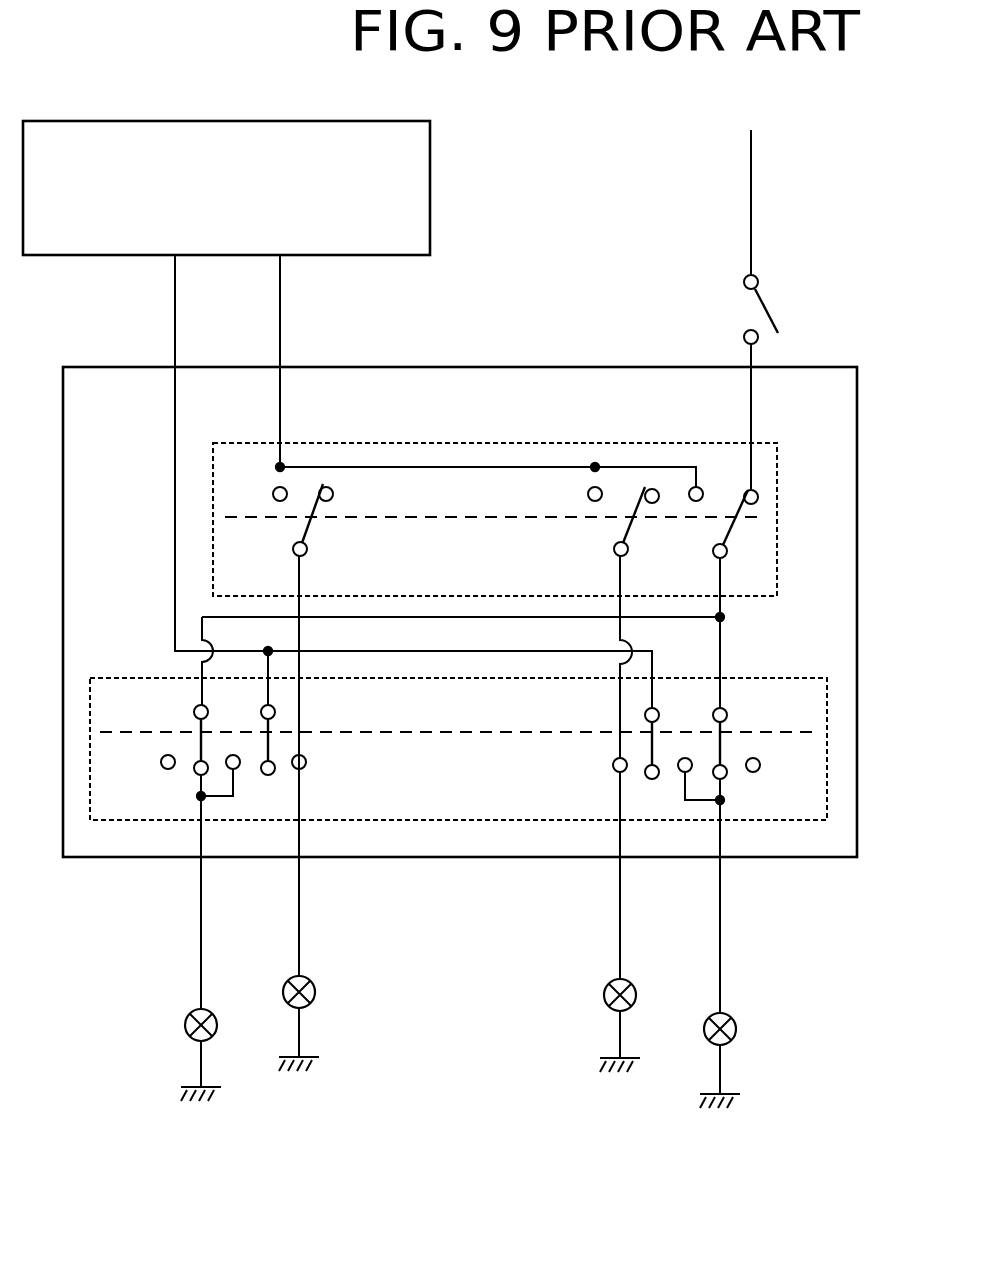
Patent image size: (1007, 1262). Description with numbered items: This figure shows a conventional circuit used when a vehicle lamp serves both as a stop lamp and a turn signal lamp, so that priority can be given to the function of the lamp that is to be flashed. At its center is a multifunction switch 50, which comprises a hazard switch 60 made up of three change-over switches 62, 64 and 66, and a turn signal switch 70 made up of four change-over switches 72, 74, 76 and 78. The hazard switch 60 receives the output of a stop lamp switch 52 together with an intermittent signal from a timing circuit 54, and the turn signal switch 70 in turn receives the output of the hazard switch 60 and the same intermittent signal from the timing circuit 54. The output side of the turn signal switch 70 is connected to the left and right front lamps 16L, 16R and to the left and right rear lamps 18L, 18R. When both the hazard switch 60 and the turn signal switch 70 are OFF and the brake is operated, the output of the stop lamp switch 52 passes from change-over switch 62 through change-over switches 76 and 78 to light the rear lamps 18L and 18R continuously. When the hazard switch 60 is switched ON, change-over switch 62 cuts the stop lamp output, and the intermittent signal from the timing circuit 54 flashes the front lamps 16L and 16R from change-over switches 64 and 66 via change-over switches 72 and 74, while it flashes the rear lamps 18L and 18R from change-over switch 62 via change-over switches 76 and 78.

The timing circuit 54 is at (432, 155).
The multifunction switch 50 is at (322, 367).
The stop lamp switch 52 is at (745, 308).
The hazard switch 60 is at (778, 472).
The change-over switch 62 is at (710, 534).
The change-over switch 64 is at (608, 532).
The change-over switch 66 is at (287, 513).
The turn signal switch 70 is at (804, 678).
The change-over switch 72 is at (638, 742).
The change-over switch 74 is at (290, 740).
The change-over switch 76 is at (195, 738).
The change-over switch 78 is at (726, 740).
The left front lamp 16L is at (601, 998).
The right front lamp 16R is at (315, 995).
The left rear lamp 18L is at (181, 1027).
The right rear lamp 18R is at (736, 1034).